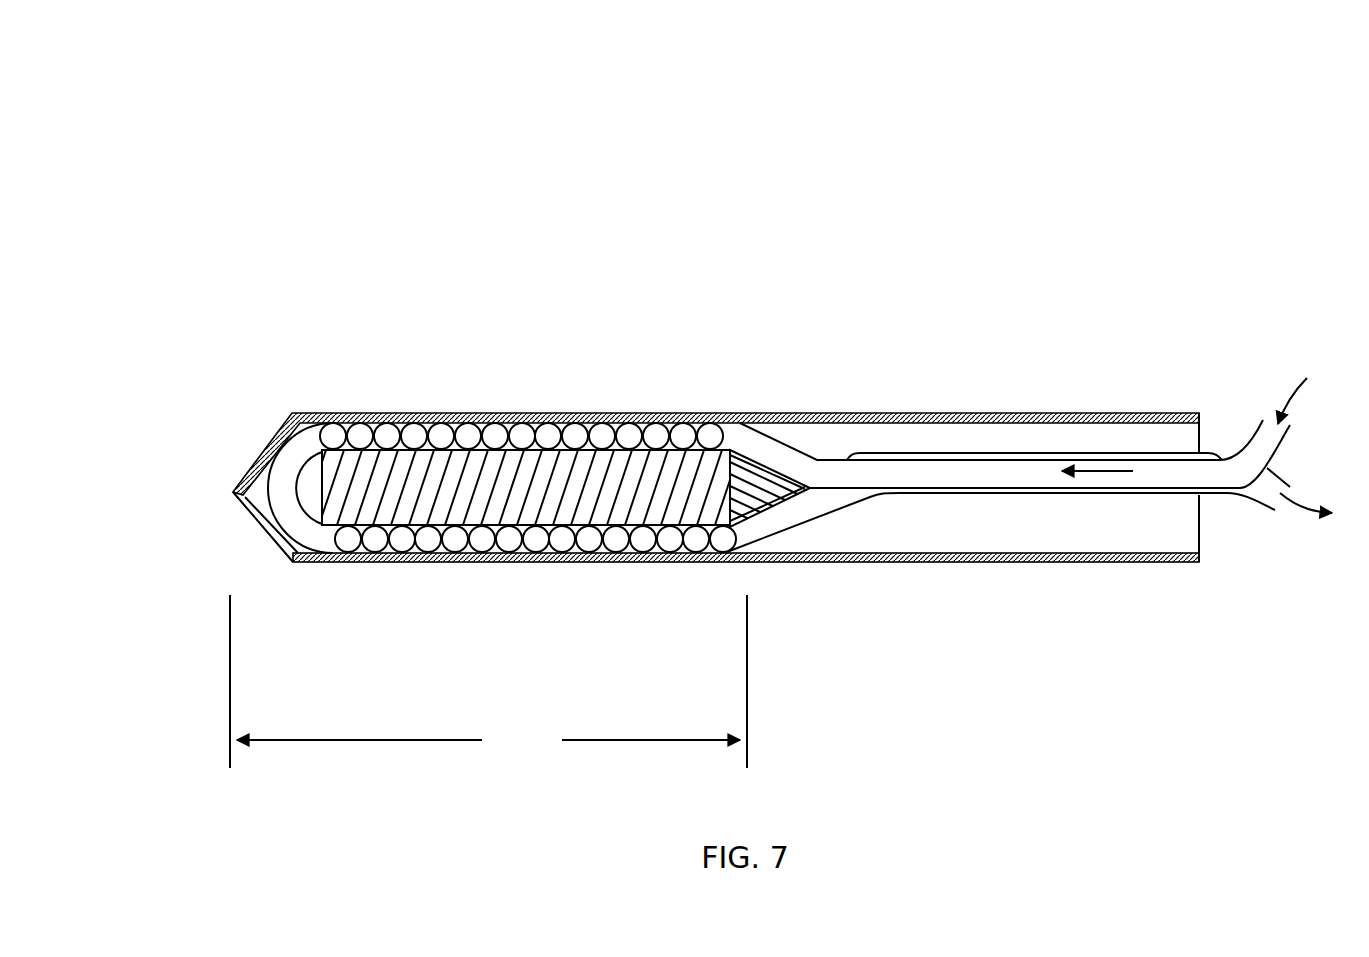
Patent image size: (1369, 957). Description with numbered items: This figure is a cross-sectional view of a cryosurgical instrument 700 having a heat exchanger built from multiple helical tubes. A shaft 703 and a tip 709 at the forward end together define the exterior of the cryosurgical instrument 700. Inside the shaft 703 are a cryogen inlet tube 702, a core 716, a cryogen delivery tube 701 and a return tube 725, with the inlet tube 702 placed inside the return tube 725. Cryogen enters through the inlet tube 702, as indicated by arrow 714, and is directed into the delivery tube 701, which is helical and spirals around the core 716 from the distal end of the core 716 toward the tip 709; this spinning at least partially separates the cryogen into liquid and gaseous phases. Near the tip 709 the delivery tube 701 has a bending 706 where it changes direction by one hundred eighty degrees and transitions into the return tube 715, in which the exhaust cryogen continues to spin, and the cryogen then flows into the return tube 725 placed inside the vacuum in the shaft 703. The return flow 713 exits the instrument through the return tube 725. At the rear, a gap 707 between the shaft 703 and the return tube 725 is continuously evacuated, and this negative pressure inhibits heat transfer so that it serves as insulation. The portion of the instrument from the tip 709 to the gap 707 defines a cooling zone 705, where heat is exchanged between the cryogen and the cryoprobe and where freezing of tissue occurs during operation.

The cryosurgical instrument 700 is at (485, 182).
The cryogen delivery tube 701 is at (713, 433).
The cryogen inlet tube 702 is at (823, 460).
The shaft 703 is at (1053, 413).
The cooling zone 705 is at (488, 681).
The bending 706 is at (283, 494).
The gap 707 is at (948, 437).
The tip 709 is at (243, 482).
The return flow 713 is at (1316, 520).
The arrow 714 is at (1107, 472).
The return tube 715 is at (722, 540).
The core 716 is at (622, 463).
The return tube 725 is at (800, 525).